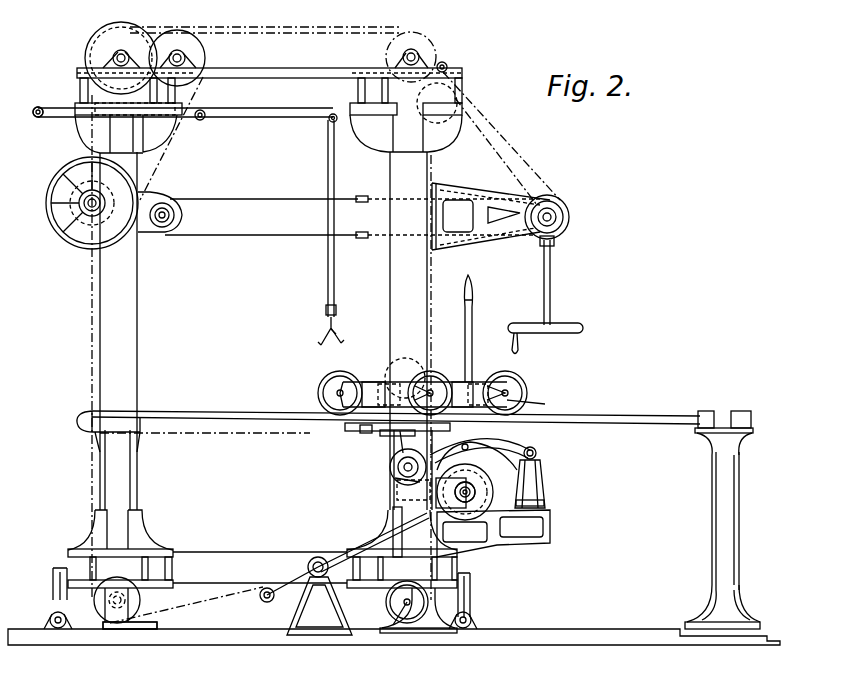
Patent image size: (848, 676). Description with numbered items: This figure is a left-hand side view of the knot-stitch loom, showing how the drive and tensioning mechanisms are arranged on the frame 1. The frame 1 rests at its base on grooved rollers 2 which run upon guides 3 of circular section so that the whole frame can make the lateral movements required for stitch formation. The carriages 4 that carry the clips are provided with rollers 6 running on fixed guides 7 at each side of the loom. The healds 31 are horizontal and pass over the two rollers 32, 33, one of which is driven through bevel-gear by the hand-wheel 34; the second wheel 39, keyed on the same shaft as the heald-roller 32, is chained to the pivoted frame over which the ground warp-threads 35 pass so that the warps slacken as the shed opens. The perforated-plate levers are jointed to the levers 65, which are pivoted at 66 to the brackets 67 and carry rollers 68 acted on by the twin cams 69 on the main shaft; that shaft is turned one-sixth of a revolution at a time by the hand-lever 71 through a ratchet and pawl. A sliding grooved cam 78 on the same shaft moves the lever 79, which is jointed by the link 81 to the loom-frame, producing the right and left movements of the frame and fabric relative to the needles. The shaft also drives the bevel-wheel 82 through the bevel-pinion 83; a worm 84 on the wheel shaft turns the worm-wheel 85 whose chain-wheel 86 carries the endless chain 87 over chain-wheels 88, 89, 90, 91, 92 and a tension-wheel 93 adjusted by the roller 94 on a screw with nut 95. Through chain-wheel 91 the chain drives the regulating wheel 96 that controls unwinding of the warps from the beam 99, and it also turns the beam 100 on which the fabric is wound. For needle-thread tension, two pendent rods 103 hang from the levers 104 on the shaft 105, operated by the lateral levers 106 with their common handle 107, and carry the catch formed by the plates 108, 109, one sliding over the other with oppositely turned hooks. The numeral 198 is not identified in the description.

The frame 1 is at (394, 356).
The grooved rollers 2 is at (268, 582).
The guides 3 is at (471, 615).
The carriages 4 is at (423, 394).
The rollers 6 is at (425, 386).
The fixed guides 7 is at (388, 422).
The healds 31 is at (352, 210).
The heald-roller 32 is at (567, 216).
The roller 33 is at (176, 208).
The hand-wheel 34 is at (545, 295).
The ground warp-threads 35 is at (345, 116).
The second wheel 39 is at (548, 196).
The levers 65 is at (500, 446).
The joint 66 is at (537, 451).
The brackets 67 is at (538, 482).
The rollers 68 is at (525, 416).
The twin cams 69 is at (548, 494).
The hand-lever 71 is at (468, 332).
The sliding grooved cam 78 is at (505, 545).
The lever 79 is at (335, 556).
The link 81 is at (279, 591).
The bevel-wheel 82 is at (480, 466).
The bevel-pinion 83 is at (482, 480).
The worm 84 is at (393, 496).
The worm-wheel 85 is at (390, 464).
The chain-wheel 86 is at (395, 478).
The endless chain 87 is at (445, 297).
The chain-wheel 88 is at (397, 603).
The chain-wheel 89 is at (319, 596).
The chain-wheel 90 is at (140, 600).
The chain-wheel 91 is at (170, 58).
The chain-wheel 92 is at (386, 58).
The tension-wheel 93 is at (390, 443).
The roller 94 is at (385, 436).
The nut 95 is at (355, 430).
The wheel 96 is at (118, 80).
The beam 99 is at (92, 203).
The beam 100 is at (108, 629).
The pendent rods 103 is at (328, 178).
The levers 104 is at (262, 121).
The shaft 105 is at (196, 122).
The lateral levers 106 is at (183, 101).
The common handle 107 is at (36, 117).
The plate 108 is at (322, 340).
The plate 109 is at (340, 337).
The pulley 198 is at (118, 24).